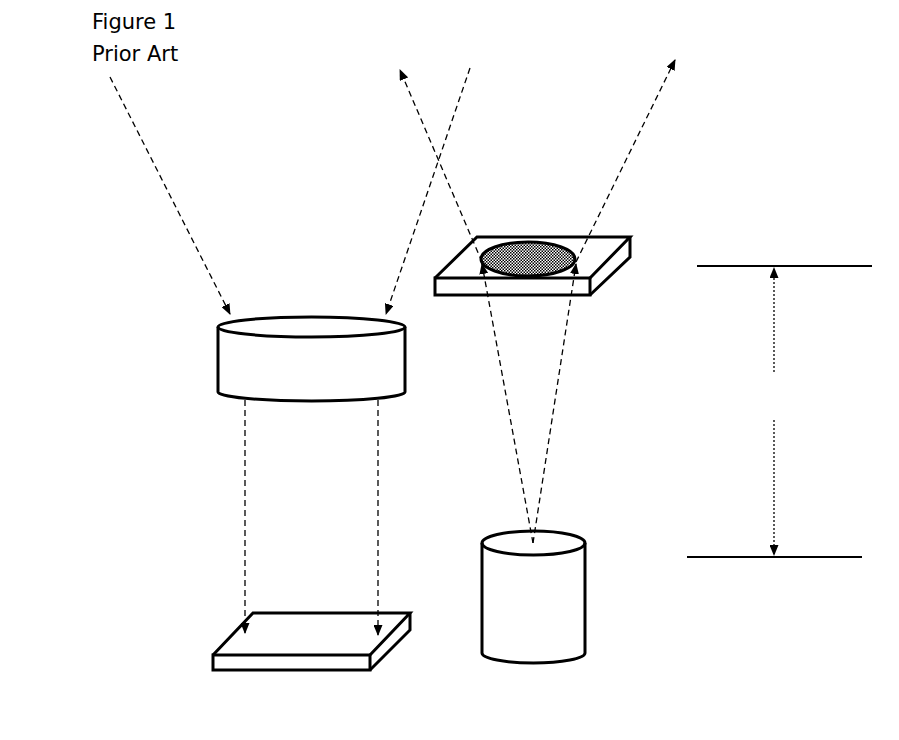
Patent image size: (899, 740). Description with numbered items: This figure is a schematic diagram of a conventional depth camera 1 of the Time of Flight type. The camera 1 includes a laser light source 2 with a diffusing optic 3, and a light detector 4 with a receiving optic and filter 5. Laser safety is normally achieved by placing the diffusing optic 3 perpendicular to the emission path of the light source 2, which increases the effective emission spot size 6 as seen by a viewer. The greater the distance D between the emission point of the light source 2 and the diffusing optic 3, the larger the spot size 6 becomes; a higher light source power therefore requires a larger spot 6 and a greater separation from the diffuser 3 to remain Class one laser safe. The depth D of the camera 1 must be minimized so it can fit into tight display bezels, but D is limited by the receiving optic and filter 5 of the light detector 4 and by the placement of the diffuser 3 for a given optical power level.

The conventional depth camera 1 is at (297, 181).
The laser light source 2 is at (543, 657).
The diffusing optic 3 is at (597, 264).
The light detector 4 is at (243, 673).
The receiving optic and filter 5 is at (218, 340).
The effective emission spot size 6 is at (527, 256).